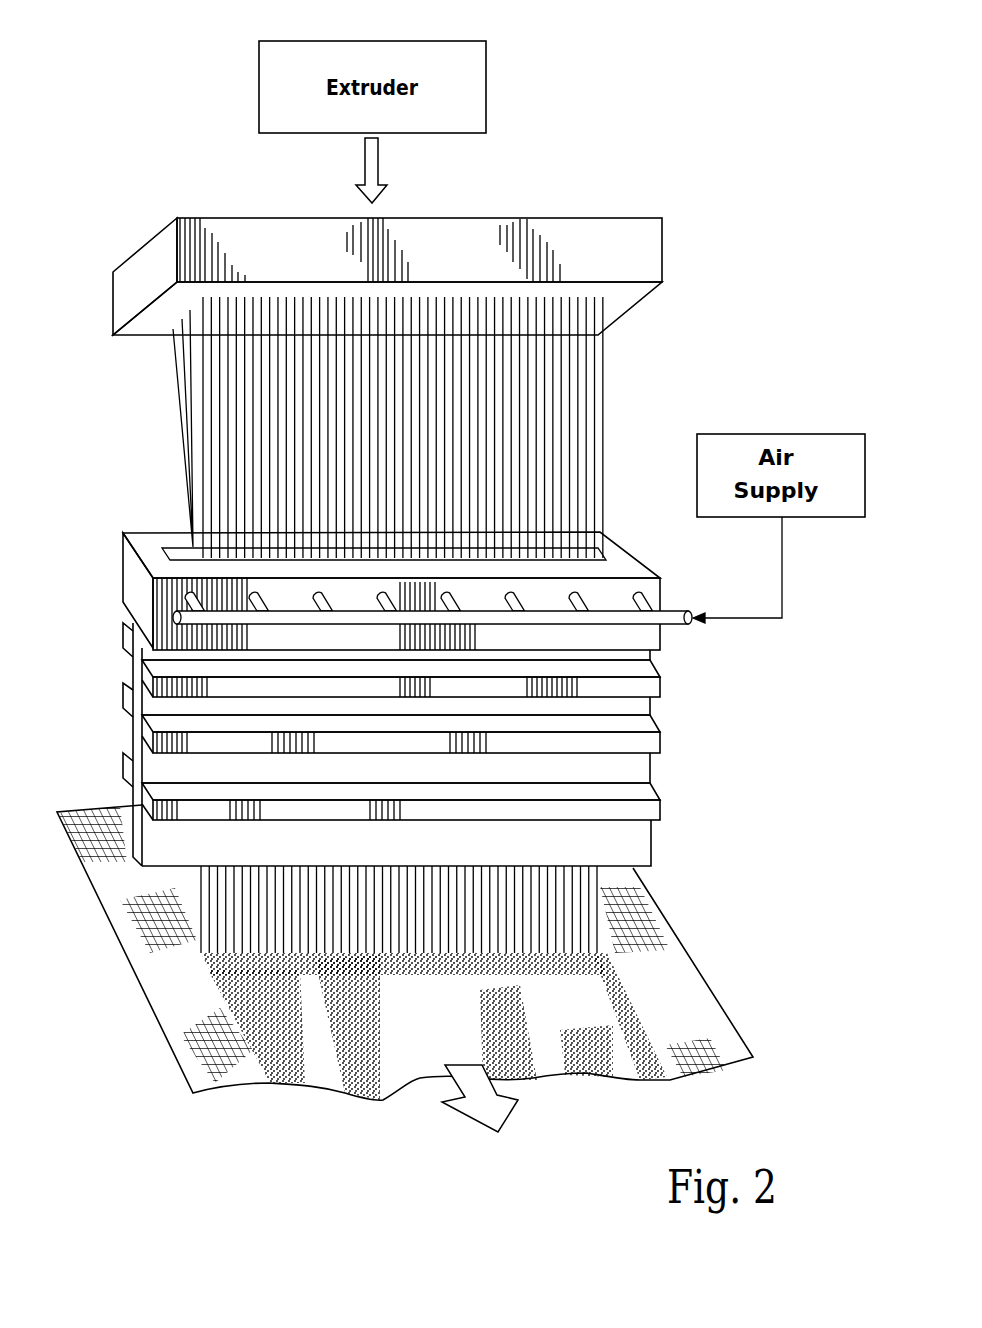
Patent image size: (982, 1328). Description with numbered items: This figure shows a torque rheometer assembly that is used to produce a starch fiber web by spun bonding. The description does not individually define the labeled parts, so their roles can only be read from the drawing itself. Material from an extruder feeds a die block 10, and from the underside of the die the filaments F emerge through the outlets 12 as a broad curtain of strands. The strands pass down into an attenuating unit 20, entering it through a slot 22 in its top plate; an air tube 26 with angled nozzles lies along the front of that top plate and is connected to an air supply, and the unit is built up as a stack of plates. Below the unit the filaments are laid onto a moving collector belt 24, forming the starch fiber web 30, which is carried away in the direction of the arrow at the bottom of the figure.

The extrusion die 10 is at (665, 258).
The die orifices 12 is at (173, 329).
The filaments F is at (190, 407).
The attenuator / air quench assembly 20 is at (377, 671).
The filament passage slot 22 is at (182, 552).
The collector belt 24 is at (135, 1008).
The air supply tube 26 is at (672, 612).
The nonwoven web 30 is at (685, 972).